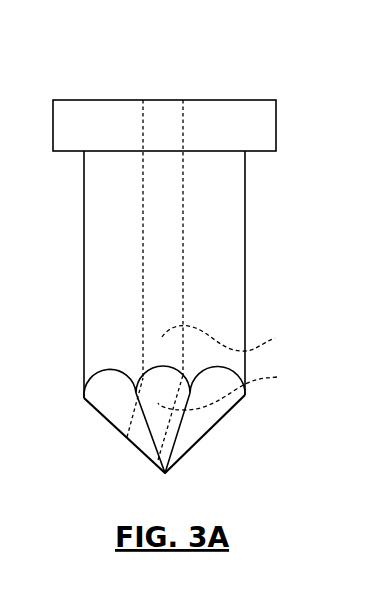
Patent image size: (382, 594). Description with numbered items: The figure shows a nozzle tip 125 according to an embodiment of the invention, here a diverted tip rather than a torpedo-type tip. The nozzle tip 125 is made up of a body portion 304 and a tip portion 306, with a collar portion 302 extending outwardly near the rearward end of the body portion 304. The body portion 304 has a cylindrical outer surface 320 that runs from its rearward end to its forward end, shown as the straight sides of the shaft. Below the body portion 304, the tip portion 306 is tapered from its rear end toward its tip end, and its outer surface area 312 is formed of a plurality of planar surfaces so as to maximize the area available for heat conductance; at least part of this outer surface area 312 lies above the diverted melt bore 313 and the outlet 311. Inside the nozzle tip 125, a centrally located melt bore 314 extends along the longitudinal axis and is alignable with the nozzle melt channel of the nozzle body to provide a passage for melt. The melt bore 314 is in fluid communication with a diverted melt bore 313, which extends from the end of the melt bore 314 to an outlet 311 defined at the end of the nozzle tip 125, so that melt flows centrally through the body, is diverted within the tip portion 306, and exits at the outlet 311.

The nozzle tip 125 is at (199, 261).
The collar portion 302 is at (53, 123).
The body portion 304 is at (245, 203).
The tip portion 306 is at (207, 433).
The outlet 311 is at (143, 452).
The outer surface area 312 is at (110, 405).
The diverted melt bore 313 is at (244, 388).
The melt bore 314 is at (242, 336).
The outer surface 320 is at (103, 267).